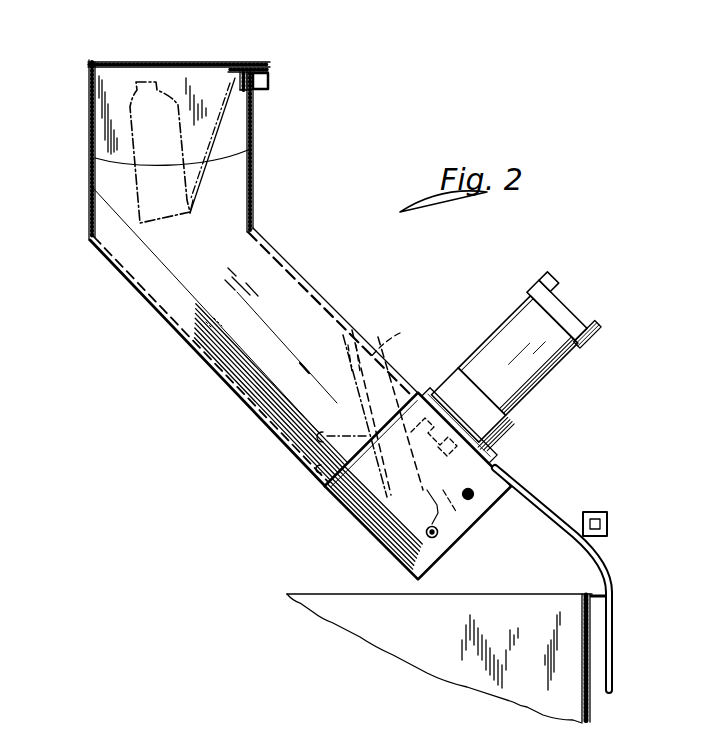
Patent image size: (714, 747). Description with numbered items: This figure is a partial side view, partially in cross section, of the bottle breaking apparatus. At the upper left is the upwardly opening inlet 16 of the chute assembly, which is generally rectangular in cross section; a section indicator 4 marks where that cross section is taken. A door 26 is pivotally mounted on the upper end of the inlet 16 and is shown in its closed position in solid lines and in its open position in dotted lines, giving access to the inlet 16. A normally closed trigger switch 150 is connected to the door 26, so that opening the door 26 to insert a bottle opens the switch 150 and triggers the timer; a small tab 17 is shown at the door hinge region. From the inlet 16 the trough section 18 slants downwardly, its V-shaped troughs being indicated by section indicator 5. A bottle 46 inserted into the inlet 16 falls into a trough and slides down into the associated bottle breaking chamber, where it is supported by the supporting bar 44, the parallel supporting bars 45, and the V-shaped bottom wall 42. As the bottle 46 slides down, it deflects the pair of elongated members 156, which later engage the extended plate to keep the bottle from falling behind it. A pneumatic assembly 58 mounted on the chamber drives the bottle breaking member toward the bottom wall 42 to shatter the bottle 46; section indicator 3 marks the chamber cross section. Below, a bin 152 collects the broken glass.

The inlet 16 is at (90, 144).
The hopper lid tab 17 is at (253, 57).
The trough section 18 is at (342, 312).
The door 26 is at (183, 62).
The bottom wall 42 is at (352, 516).
The supporting bar 44 is at (437, 537).
The supporting bars 45 is at (473, 494).
The bottle 46 is at (132, 100).
The pneumatic assembly 58 is at (559, 273).
The trigger switch 150 is at (263, 91).
The bin 152 is at (320, 620).
The elongated members 156 is at (372, 352).
The section line 3- 3 is at (515, 492).
The section line 4- 4 is at (48, 128).
The section line 5- 5 is at (327, 254).